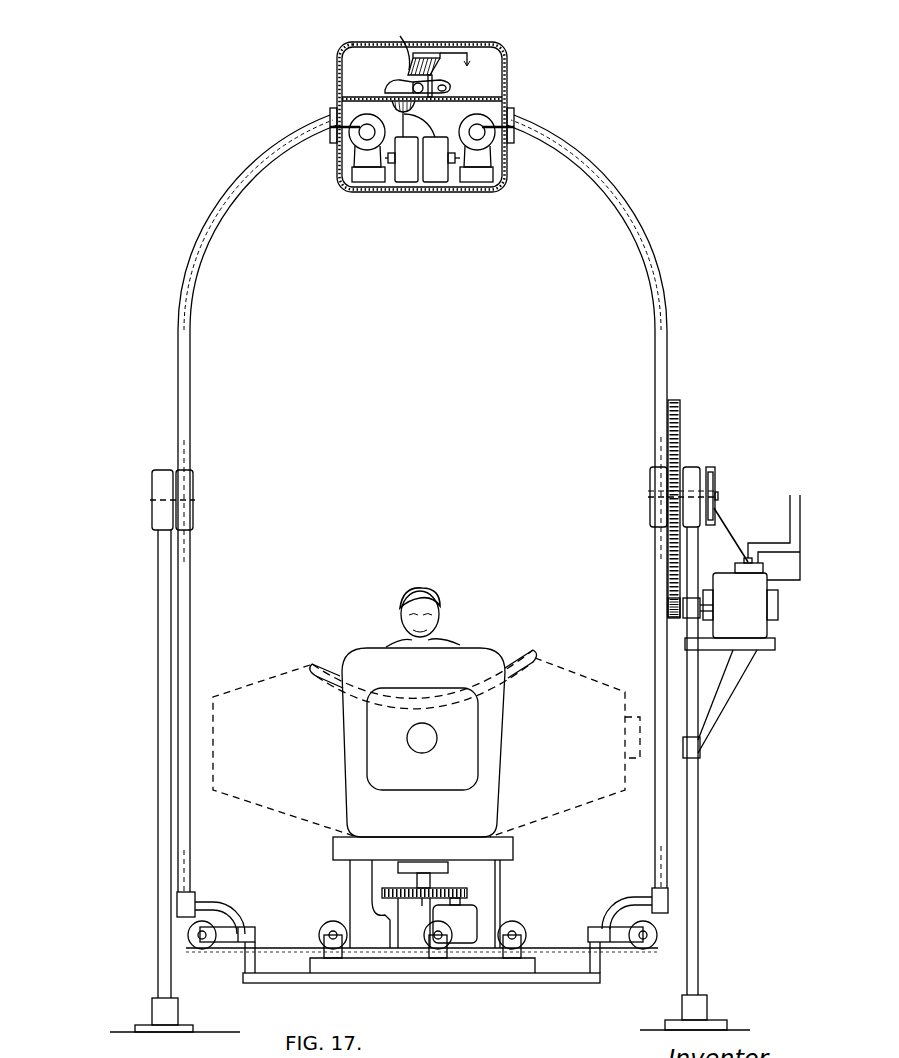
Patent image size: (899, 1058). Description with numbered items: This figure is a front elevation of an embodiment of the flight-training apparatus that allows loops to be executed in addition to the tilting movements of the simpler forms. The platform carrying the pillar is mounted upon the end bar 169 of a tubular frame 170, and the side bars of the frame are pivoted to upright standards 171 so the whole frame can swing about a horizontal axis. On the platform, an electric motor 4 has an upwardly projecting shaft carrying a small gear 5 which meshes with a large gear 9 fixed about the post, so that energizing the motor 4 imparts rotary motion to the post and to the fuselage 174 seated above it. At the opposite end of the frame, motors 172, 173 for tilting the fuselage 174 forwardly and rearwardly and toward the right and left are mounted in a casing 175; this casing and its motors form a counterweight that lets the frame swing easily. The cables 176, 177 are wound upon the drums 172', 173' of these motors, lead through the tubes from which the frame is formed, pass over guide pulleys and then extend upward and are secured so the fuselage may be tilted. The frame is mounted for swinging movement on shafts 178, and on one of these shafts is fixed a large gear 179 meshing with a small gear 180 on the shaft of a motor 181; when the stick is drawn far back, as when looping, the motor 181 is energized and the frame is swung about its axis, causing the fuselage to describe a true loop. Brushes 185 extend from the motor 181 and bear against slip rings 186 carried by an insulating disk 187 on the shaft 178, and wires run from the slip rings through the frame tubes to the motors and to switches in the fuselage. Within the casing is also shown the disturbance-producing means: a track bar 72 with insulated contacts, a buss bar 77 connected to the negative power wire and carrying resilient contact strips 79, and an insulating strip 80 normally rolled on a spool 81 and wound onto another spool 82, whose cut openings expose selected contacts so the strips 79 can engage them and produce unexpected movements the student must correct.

The electric motor 4 is at (465, 935).
The gear 5 is at (458, 884).
The large gear 9 is at (385, 890).
The track bar 72 is at (445, 85).
The buss bar 77 is at (440, 54).
The resilient contact strips 79 is at (394, 45).
The insulating strip 80 is at (397, 82).
The spool 81 is at (450, 88).
The spool 82 is at (385, 88).
The end bar 169 is at (515, 975).
The frame 170 is at (668, 822).
The standards 171 is at (158, 710).
The motor 172 is at (404, 161).
The drum 172' is at (336, 150).
The motor 173 is at (433, 165).
The drum 173' is at (506, 155).
The fuselage 174 is at (488, 753).
The casing 175 is at (508, 68).
The cable 176 is at (270, 946).
The cable 177 is at (430, 886).
The shafts 178 is at (195, 500).
The large gear 179 is at (683, 412).
The small gear 180 is at (680, 608).
The motor 181 is at (751, 620).
The brushes 185 is at (735, 530).
The slip rings 186 is at (716, 470).
The insulating disk 187 is at (710, 466).